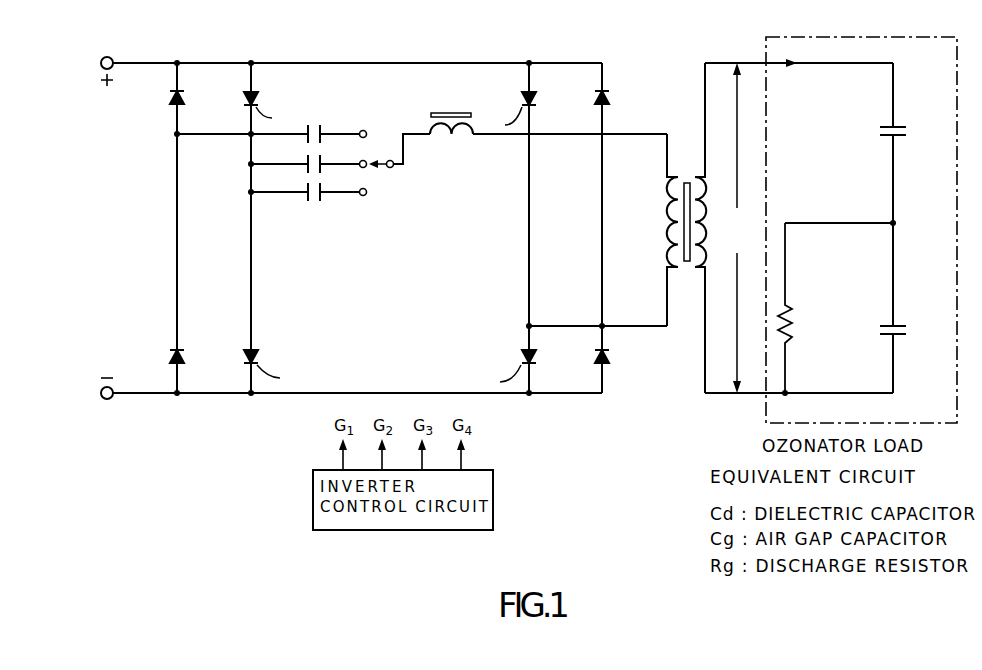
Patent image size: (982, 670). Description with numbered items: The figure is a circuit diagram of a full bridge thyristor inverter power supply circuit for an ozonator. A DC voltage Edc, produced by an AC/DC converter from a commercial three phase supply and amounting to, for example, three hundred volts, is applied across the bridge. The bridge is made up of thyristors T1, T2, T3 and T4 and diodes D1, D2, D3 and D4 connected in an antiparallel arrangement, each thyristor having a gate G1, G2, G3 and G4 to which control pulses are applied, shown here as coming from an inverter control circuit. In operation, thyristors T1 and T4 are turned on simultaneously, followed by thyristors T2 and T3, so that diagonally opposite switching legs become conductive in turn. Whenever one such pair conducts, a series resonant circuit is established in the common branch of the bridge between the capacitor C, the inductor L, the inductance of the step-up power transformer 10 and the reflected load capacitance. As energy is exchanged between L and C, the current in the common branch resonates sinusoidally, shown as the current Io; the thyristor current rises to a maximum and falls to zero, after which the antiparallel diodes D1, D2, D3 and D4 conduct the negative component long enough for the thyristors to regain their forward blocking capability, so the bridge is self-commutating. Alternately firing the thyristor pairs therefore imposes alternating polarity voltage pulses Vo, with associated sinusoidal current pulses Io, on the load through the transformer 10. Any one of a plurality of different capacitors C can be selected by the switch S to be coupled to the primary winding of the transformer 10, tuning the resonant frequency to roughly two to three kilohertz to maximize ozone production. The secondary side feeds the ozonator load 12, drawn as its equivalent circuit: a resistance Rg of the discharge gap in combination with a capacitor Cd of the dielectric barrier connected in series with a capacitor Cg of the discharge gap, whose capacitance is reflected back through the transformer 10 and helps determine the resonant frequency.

The step-up power transformer 10 is at (688, 170).
The ozonator load 12 is at (862, 388).
The DC voltage Edc is at (117, 225).
The diode D1 is at (191, 99).
The diode D2 is at (191, 358).
The diode D3 is at (616, 101).
The diode D4 is at (616, 359).
The thyristor T1 is at (262, 99).
The thyristor T2 is at (262, 357).
The thyristor T3 is at (543, 103).
The thyristor T4 is at (540, 359).
The gate of thyristor T1 G1 is at (275, 121).
The gate of thyristor T2 G2 is at (280, 380).
The gate of thyristor T3 G3 is at (502, 121).
The gate of thyristor T4 G4 is at (498, 380).
The capacitor C is at (272, 175).
The switch S is at (399, 162).
The inductor L is at (451, 136).
The sinusoidal current pulses Io is at (798, 51).
The voltage pulses of alternating polarity Vo is at (737, 228).
The capacitor of the dielectric barrier Cd is at (906, 143).
The capacitor of the discharge gap Cg is at (906, 308).
The resistance of the discharge gap Rg is at (835, 308).